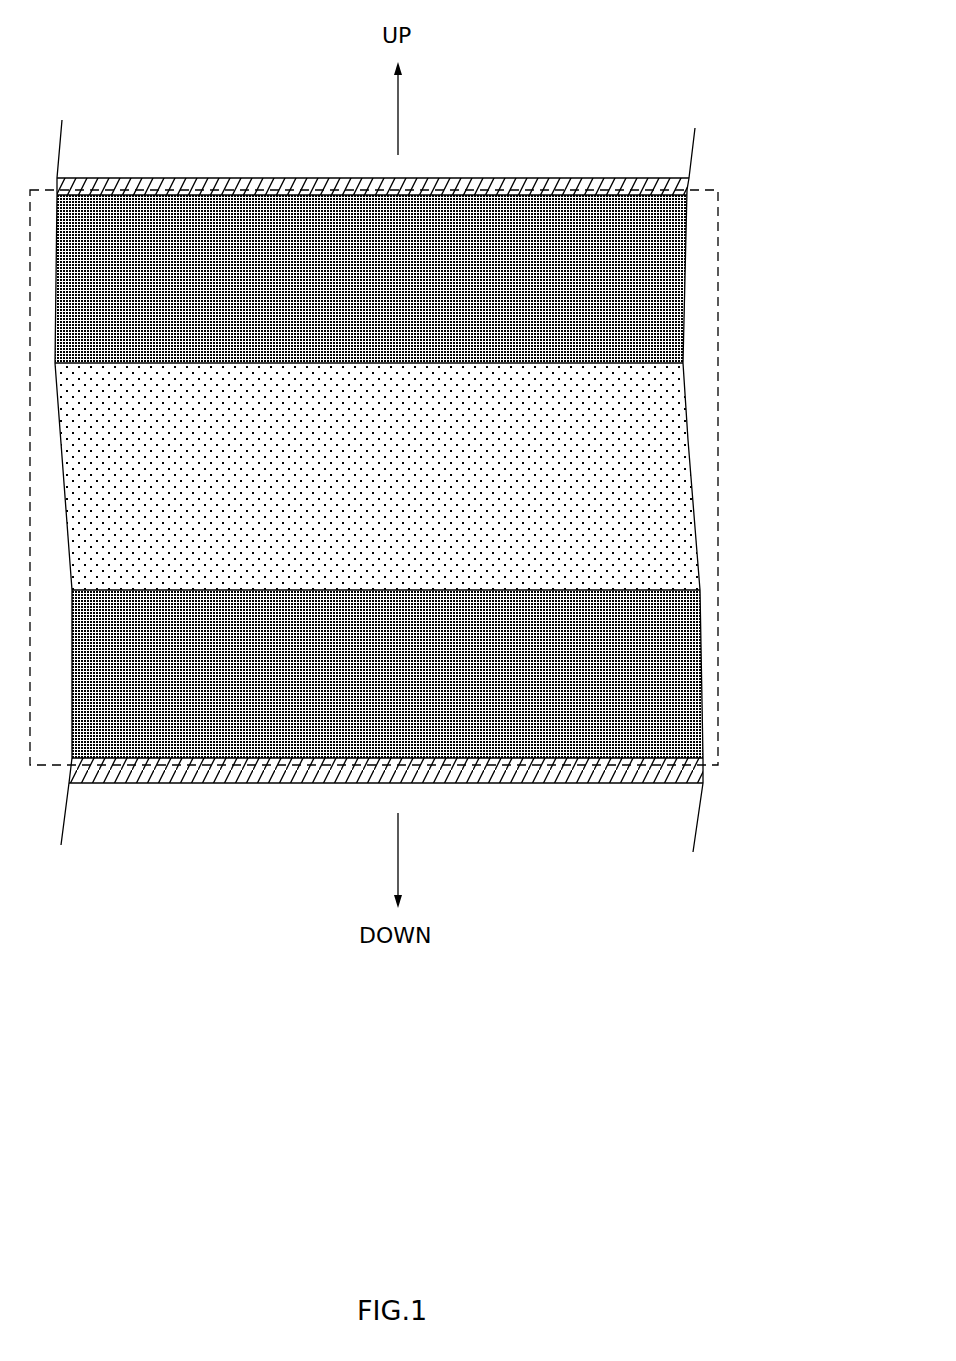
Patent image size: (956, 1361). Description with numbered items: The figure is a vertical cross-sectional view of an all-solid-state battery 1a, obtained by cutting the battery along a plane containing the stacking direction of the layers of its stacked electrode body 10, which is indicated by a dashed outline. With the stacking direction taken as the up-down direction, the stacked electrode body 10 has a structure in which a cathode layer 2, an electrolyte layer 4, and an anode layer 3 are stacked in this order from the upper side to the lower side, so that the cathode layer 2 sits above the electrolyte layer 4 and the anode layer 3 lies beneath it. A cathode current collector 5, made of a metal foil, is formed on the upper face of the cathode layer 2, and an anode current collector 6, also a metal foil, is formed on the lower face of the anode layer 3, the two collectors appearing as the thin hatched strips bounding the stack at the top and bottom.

The all-solid-state battery 1a is at (170, 43).
The cathode layer 2 is at (603, 263).
The anode layer 3 is at (673, 680).
The electrolyte layer 4 is at (665, 482).
The cathode current collector 5 is at (543, 178).
The anode current collector 6 is at (557, 785).
The stacked electrode body 10 is at (718, 362).